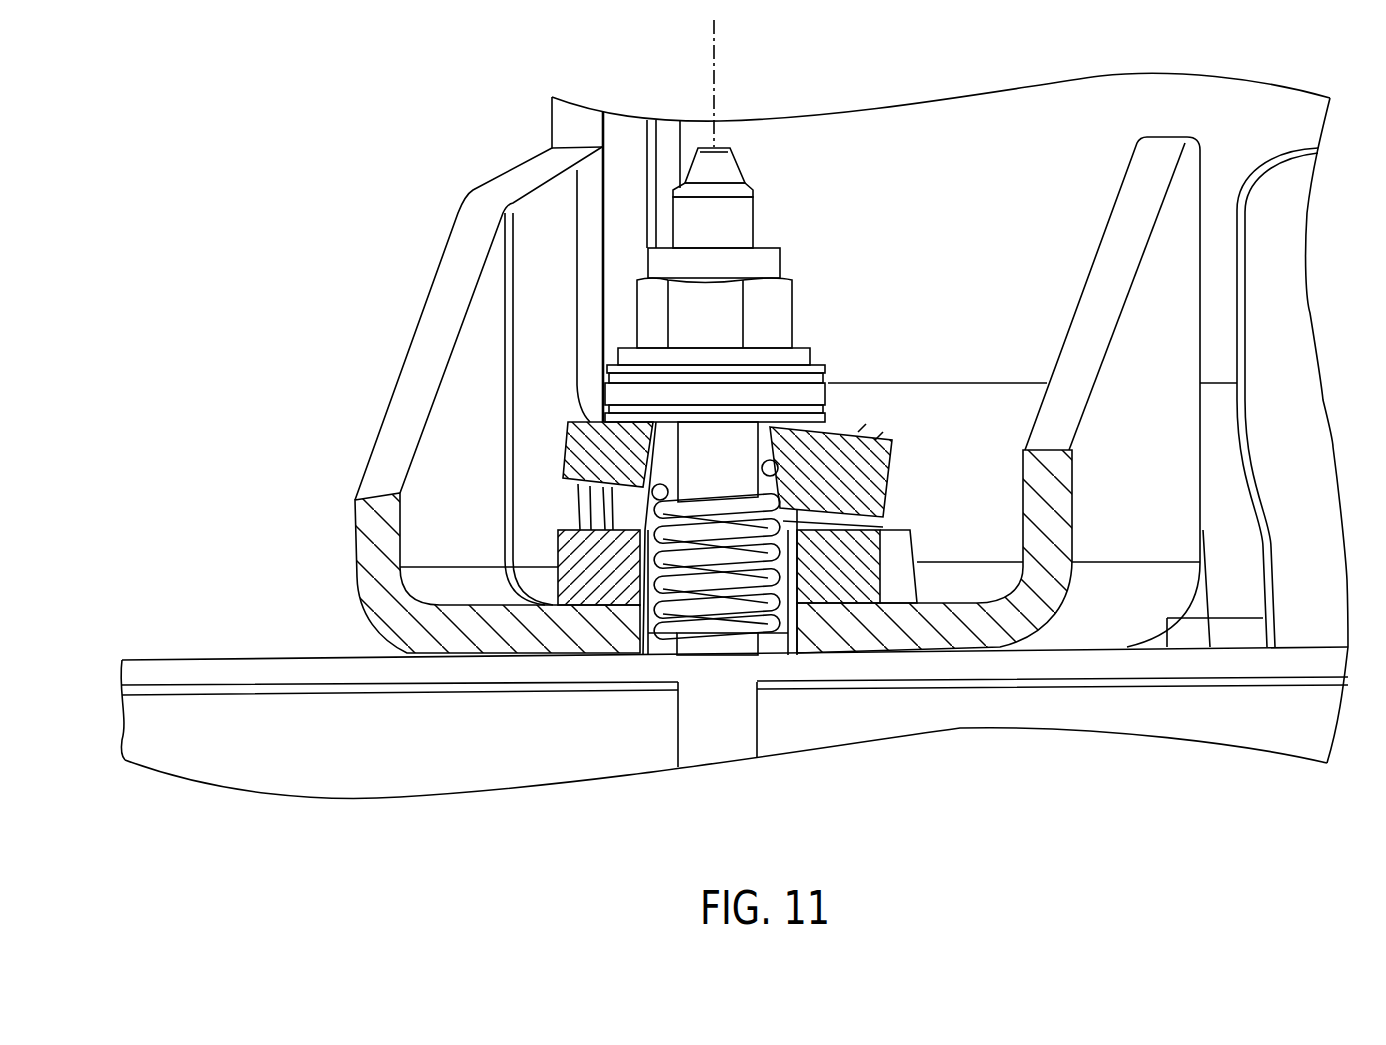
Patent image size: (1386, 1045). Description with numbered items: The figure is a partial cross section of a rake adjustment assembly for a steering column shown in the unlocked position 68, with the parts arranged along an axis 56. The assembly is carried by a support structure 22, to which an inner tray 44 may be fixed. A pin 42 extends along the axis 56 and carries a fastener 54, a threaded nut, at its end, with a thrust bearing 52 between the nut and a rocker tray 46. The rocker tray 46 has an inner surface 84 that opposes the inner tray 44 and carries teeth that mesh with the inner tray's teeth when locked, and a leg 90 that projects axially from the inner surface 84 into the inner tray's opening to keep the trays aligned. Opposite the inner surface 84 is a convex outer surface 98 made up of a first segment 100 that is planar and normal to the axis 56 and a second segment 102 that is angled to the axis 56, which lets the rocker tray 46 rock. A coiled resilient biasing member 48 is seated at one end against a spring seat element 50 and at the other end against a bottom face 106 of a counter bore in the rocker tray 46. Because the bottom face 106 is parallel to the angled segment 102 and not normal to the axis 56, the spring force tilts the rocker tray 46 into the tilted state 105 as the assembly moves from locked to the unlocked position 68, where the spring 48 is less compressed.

The support structure 22 is at (1117, 228).
The pin 42 is at (754, 213).
The inner tray 44 is at (935, 590).
The rocker tray 46 is at (905, 453).
The resilient biasing member 48 is at (698, 635).
The spring seat element 50 is at (645, 605).
The thrust bearing 52 is at (832, 372).
The fastener 54 is at (792, 300).
The axis 56 is at (721, 81).
The unlocked position 68 is at (370, 191).
The inner surface 84 is at (648, 500).
The leg 90 is at (800, 610).
The outer surface 98 is at (862, 427).
The first segment 100 is at (877, 437).
The second segment 102 is at (592, 422).
The tilted state 105 is at (532, 438).
The bottom face 106 is at (778, 462).